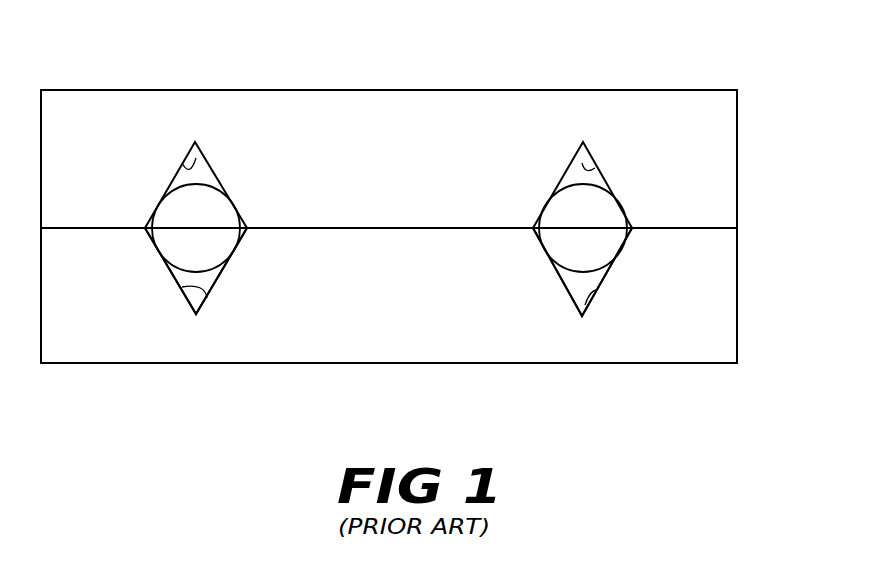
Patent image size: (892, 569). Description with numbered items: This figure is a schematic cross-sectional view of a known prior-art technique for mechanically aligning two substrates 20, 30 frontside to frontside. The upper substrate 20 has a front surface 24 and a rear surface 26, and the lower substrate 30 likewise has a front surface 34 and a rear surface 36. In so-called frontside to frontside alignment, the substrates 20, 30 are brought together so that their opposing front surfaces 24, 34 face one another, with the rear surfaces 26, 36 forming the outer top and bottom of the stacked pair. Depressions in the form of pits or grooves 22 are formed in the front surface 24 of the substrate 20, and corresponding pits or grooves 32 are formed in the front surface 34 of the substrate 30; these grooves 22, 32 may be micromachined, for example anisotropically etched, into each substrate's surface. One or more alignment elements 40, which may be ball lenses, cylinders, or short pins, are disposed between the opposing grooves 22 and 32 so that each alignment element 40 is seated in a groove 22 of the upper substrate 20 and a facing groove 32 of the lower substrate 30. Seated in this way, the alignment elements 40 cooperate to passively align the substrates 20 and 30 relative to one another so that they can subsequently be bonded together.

The substrate 20 is at (352, 188).
The substrate 30 is at (352, 323).
The rear surface 26 is at (367, 90).
The front surface 24 is at (427, 228).
The front surface 34 is at (450, 228).
The rear surface 36 is at (643, 363).
The groove 22 is at (194, 142).
The groove 32 is at (207, 298).
The alignment element 40 is at (183, 239).